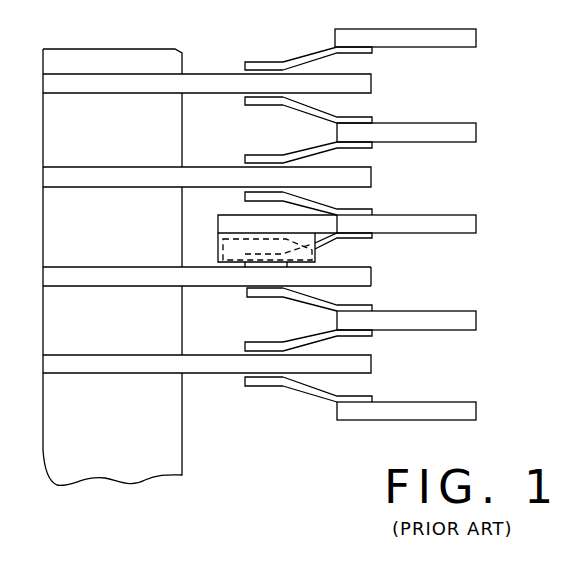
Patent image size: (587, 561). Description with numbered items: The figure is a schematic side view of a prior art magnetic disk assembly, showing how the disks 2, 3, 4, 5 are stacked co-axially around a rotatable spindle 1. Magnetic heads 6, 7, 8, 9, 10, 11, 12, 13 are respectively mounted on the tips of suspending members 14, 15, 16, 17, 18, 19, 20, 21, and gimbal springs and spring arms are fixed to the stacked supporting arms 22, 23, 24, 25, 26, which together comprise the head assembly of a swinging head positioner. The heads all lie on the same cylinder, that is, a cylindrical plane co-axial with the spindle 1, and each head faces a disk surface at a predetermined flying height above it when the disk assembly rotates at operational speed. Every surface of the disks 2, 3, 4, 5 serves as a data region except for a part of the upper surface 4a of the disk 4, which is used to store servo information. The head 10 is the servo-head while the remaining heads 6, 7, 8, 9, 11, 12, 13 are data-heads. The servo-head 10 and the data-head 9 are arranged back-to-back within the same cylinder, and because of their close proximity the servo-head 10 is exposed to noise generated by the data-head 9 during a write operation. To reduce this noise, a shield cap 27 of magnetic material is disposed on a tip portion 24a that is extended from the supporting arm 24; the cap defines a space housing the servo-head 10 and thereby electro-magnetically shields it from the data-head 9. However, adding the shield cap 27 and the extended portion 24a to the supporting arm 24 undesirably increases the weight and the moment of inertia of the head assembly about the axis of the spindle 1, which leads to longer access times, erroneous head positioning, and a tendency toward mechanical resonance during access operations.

The spindle 1 is at (118, 57).
The disk 2 is at (52, 88).
The disk 3 is at (52, 182).
The disk 4 is at (52, 280).
The upper surface of the disk 4a is at (372, 279).
The disk 5 is at (52, 374).
The magnetic head 6 is at (246, 68).
The magnetic head 7 is at (249, 96).
The magnetic head 8 is at (246, 164).
The data-head 9 is at (247, 192).
The servo-head 10 is at (261, 263).
The magnetic head 11 is at (267, 289).
The magnetic head 12 is at (246, 350).
The magnetic head 13 is at (248, 378).
The suspending member 14 is at (307, 57).
The suspending member 15 is at (304, 110).
The suspending member 16 is at (306, 149).
The suspending member 17 is at (298, 206).
The suspending member 18 is at (362, 238).
The suspending member 19 is at (306, 302).
The suspending member 20 is at (364, 337).
The suspending member 21 is at (360, 395).
The supporting arm 22 is at (477, 35).
The supporting arm 23 is at (477, 130).
The supporting arm 24 is at (477, 222).
The tip portion 24a is at (298, 226).
The supporting arm 25 is at (477, 320).
The supporting arm 26 is at (477, 410).
The shield cap 27 is at (218, 250).